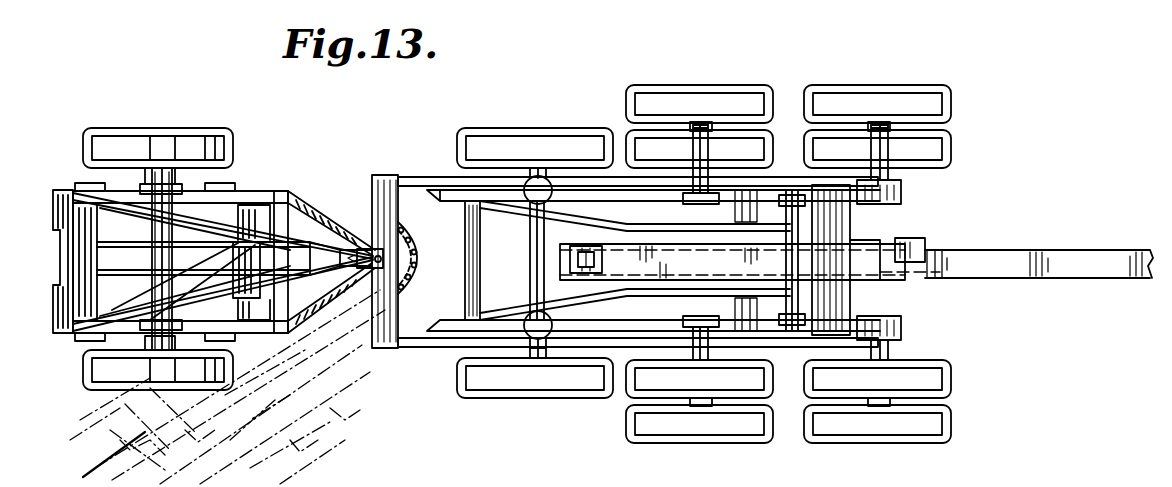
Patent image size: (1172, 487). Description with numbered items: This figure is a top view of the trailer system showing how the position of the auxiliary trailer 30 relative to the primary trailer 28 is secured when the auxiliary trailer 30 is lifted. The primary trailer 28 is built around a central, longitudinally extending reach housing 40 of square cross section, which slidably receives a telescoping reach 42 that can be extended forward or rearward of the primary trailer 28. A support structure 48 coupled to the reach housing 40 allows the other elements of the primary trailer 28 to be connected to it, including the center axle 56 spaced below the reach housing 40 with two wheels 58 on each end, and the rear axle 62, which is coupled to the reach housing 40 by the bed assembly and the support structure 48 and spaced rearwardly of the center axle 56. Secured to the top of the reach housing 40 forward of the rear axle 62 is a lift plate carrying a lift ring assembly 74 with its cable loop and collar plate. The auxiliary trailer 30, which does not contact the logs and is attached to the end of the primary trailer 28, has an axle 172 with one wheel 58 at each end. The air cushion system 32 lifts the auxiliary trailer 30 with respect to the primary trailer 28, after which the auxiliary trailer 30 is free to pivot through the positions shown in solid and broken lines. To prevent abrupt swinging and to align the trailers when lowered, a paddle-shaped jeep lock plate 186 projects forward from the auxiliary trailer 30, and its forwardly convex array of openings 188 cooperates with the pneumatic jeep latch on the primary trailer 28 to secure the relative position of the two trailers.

The primary trailer 28 is at (937, 213).
The auxiliary trailer 30 is at (262, 168).
The air cushion system 32 is at (527, 337).
The reach housing 40 is at (908, 270).
The telescoping reach 42 is at (1037, 273).
The support structure 48 is at (767, 297).
The center axle 56 is at (703, 127).
The wheels 58 is at (112, 142).
The rear axle 62 is at (542, 177).
The lift ring assembly 74 is at (570, 260).
The axle 172 is at (178, 170).
The jeep lock plate 186 is at (405, 335).
The openings 188 is at (418, 225).